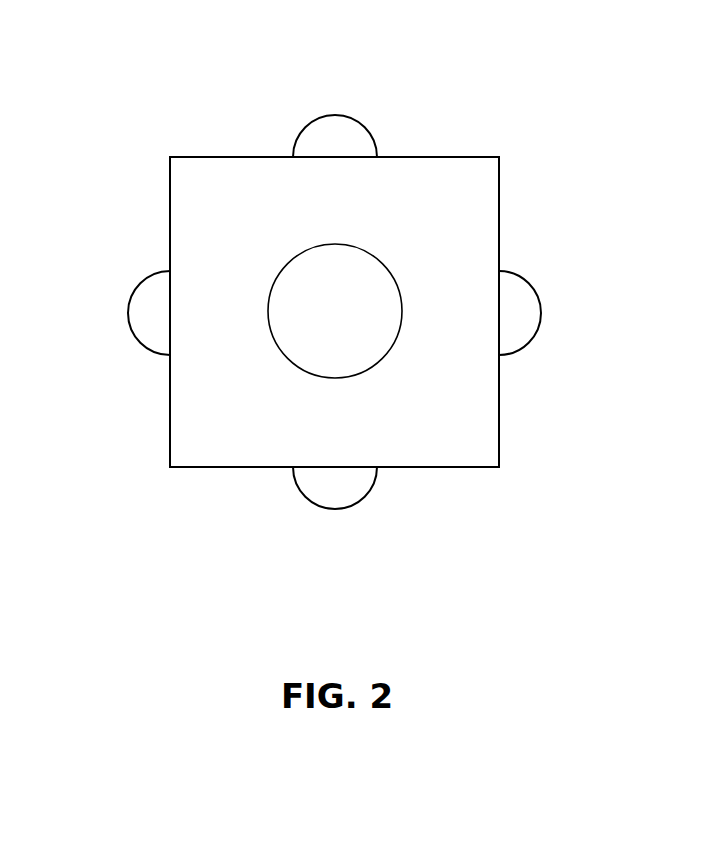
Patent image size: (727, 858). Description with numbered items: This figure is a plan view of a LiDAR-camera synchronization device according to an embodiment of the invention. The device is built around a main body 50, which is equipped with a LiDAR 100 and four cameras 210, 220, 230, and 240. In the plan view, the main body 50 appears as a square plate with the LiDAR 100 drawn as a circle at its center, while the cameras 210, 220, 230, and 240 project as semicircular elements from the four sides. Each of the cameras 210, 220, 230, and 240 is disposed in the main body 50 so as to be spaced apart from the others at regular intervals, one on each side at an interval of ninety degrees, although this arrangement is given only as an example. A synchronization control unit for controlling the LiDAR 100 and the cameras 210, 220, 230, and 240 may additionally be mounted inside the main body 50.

The main body 50 is at (213, 157).
The LiDAR 100 is at (387, 262).
The camera 210 is at (335, 115).
The camera 220 is at (128, 311).
The camera 230 is at (333, 511).
The camera 240 is at (543, 310).